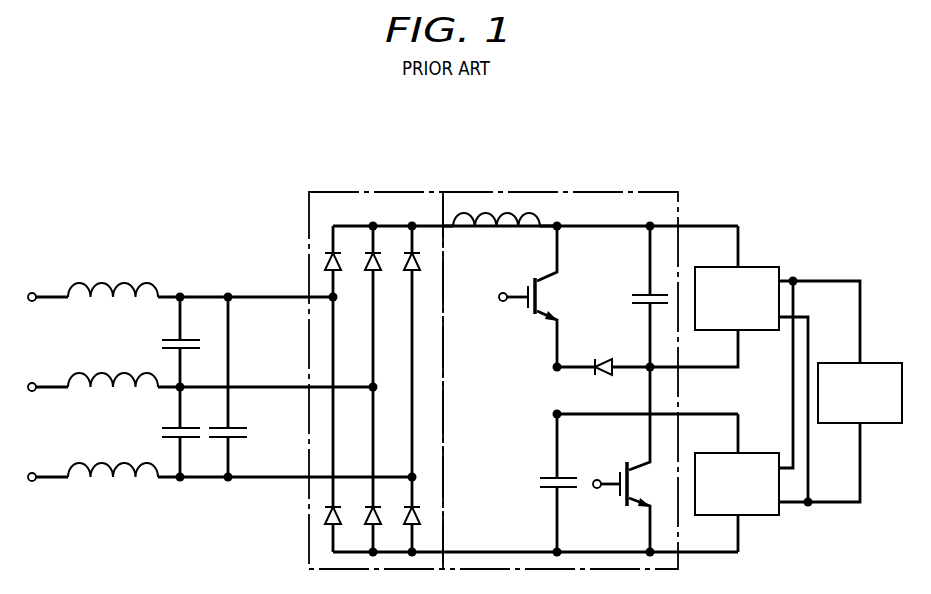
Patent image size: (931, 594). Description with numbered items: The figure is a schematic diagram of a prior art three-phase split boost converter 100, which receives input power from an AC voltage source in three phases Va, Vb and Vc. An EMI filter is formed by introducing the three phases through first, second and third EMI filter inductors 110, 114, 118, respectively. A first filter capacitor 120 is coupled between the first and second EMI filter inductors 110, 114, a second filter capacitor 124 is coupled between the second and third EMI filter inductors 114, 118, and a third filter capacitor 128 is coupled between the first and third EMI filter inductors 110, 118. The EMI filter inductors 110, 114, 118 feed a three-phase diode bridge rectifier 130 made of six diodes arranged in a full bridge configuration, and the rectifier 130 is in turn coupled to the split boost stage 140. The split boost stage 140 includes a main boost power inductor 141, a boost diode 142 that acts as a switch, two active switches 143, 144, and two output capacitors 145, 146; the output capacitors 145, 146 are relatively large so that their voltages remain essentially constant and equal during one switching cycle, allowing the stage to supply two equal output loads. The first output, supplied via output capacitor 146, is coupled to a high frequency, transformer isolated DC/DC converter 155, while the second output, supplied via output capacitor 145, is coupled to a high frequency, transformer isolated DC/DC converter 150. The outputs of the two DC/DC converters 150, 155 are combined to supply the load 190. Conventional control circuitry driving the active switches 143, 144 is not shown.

The three-phase split boost converter 100 is at (148, 193).
The first EMI filter inductor 110 is at (74, 283).
The second EMI filter inductor 114 is at (74, 373).
The third EMI filter inductor 118 is at (74, 463).
The first filter capacitor 120 is at (162, 344).
The second filter capacitor 124 is at (162, 432).
The third filter capacitor 128 is at (247, 431).
The three-phase diode bridge rectifier 130 is at (388, 191).
The split boost stage 140 is at (593, 191).
The main boost power inductor 141 is at (487, 229).
The boost diode 142 is at (603, 358).
The active switch 143 is at (525, 306).
The active switch 144 is at (616, 496).
The output capacitor 145 is at (632, 297).
The output capacitor 146 is at (540, 482).
The DC/DC converter 150 is at (763, 264).
The DC/DC converter 155 is at (765, 518).
The load 190 is at (885, 425).